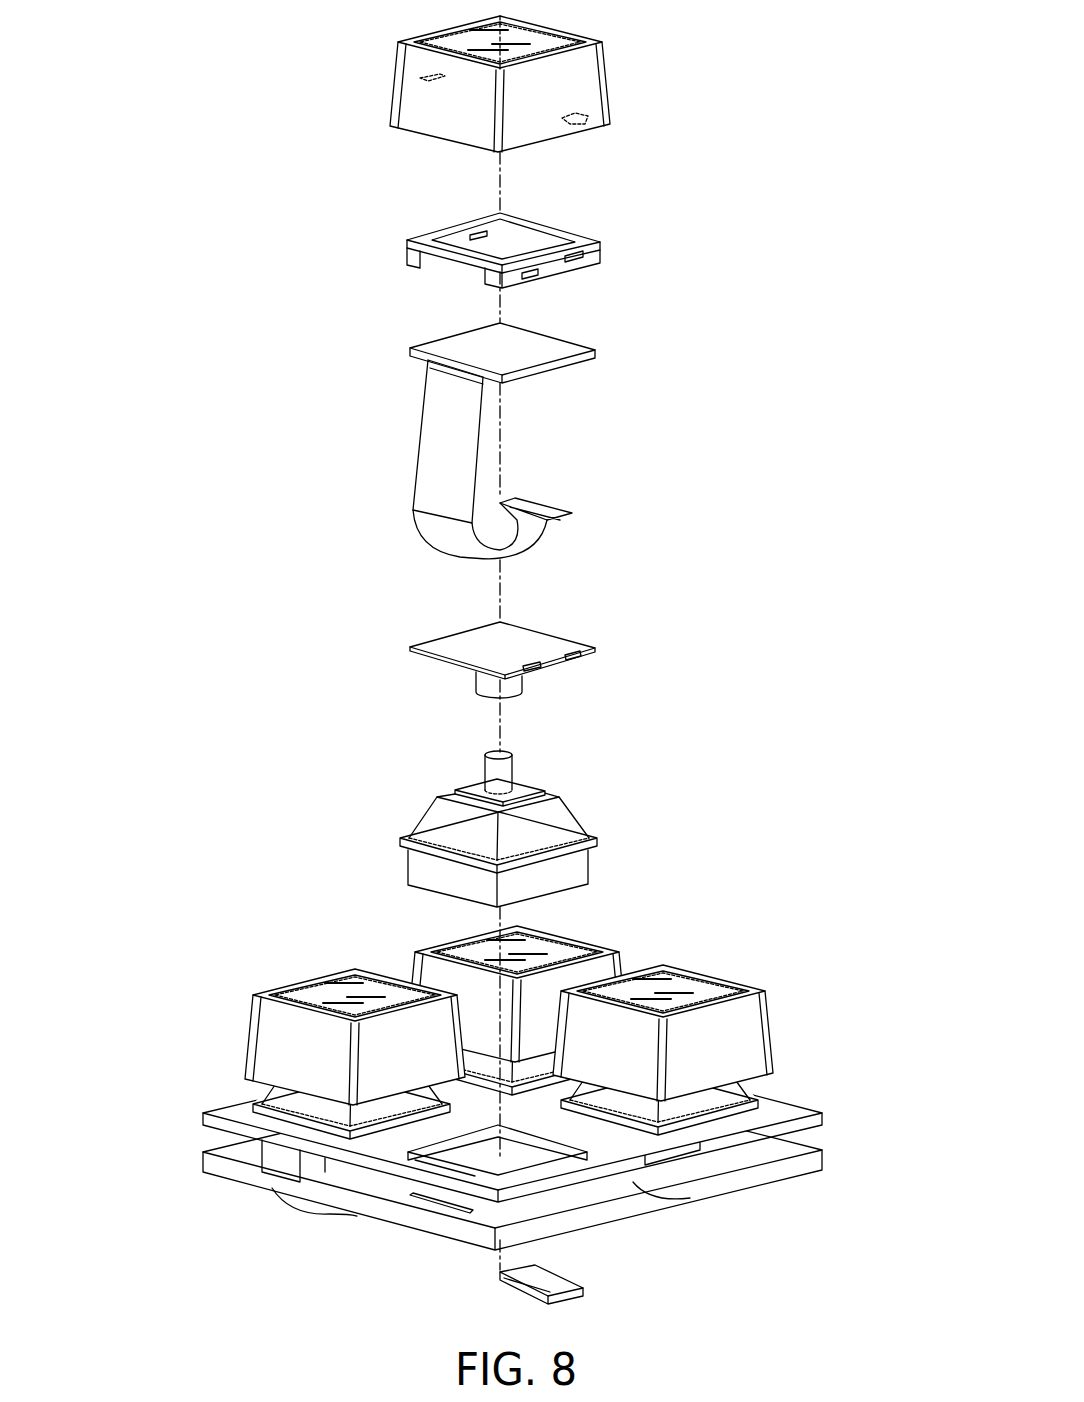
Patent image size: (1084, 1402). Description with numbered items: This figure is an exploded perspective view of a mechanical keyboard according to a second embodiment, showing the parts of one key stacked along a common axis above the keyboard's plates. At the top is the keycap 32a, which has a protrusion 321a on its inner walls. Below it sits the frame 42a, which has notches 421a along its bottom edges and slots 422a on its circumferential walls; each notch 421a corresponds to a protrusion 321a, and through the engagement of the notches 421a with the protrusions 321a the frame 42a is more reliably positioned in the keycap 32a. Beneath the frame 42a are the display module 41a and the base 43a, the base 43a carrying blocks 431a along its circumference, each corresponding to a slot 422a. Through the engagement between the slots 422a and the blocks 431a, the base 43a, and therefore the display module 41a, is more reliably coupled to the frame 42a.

The keycap 32a is at (460, 84).
The protrusion 321a is at (570, 115).
The frame 42a is at (593, 234).
The slot 422a is at (578, 268).
The notch 421a is at (553, 273).
The display module 41a is at (457, 332).
The base 43a is at (588, 640).
The block 431a is at (577, 660).